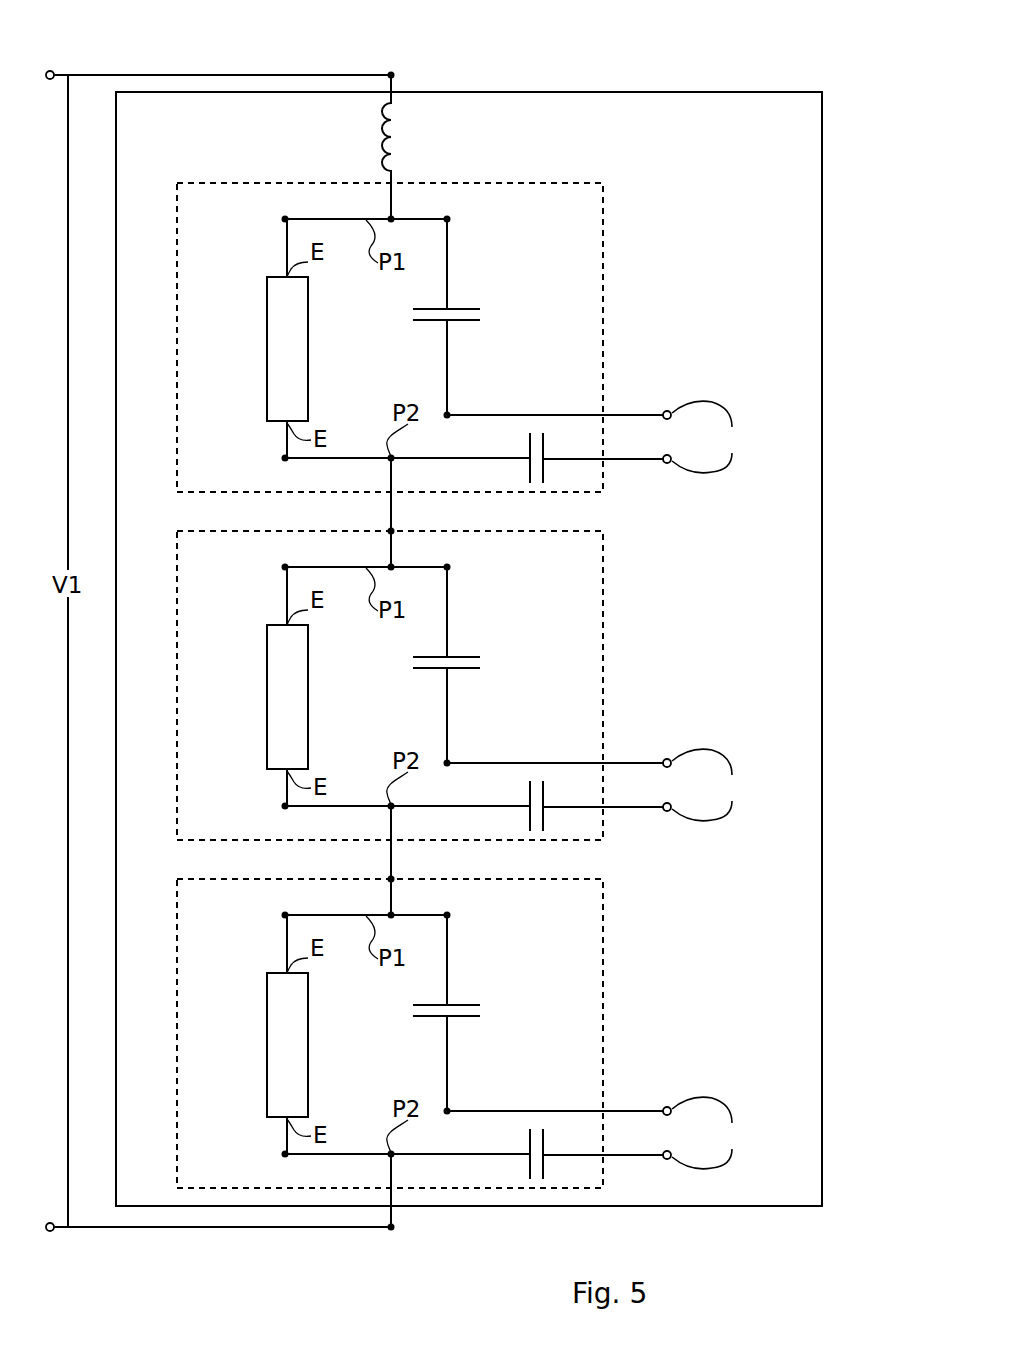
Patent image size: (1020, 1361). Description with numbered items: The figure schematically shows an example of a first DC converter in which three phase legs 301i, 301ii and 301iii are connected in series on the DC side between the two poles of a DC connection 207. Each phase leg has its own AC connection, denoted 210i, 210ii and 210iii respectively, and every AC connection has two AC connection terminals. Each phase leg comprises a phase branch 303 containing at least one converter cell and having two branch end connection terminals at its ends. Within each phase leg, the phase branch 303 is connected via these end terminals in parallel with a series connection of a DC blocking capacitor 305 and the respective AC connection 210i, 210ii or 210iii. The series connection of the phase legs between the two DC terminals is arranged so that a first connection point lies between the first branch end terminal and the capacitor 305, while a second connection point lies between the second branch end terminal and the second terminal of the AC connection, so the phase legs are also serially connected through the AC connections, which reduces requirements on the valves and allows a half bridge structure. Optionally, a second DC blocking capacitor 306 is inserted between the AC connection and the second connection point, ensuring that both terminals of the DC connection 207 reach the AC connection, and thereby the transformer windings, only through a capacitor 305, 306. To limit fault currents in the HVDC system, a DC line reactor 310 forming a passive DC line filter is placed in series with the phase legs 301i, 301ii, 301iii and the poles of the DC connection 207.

The DC connection 207 is at (80, 73).
The DC line reactor 310 is at (382, 146).
The first phase leg 301i is at (390, 357).
The second phase leg 301ii is at (390, 704).
The third phase leg 301iii is at (390, 1052).
The phase branch 303 is at (254, 686).
The DC blocking capacitor 305 is at (538, 665).
The second DC blocking capacitor 306 is at (558, 805).
The first AC connection 210i is at (738, 437).
The second AC connection 210ii is at (738, 785).
The third AC connection 210iii is at (738, 1133).